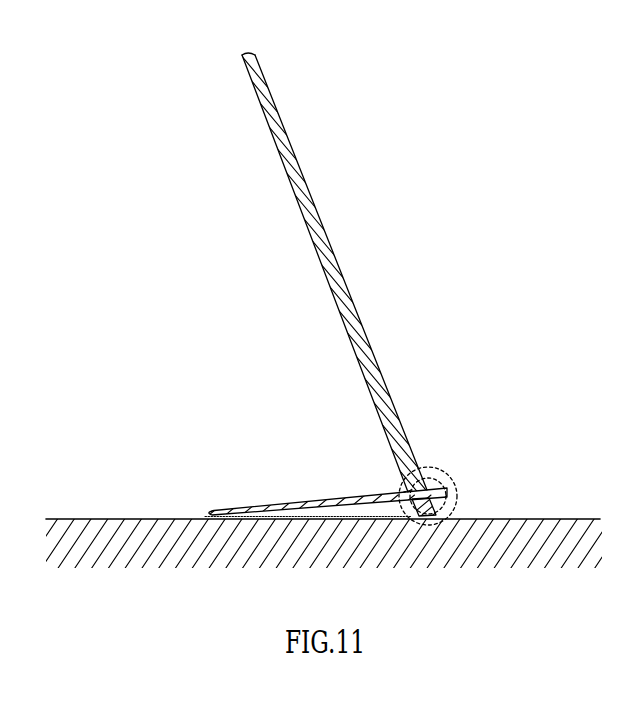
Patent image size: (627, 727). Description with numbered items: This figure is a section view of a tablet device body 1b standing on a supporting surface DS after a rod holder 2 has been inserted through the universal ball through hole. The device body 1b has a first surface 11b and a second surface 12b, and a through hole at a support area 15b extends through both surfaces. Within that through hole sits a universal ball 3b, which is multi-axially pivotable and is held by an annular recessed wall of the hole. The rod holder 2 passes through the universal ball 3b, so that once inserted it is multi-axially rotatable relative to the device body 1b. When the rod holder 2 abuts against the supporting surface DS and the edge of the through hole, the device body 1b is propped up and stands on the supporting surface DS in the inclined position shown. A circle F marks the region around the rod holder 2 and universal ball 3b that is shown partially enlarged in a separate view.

The device body 1b is at (335, 280).
The first surface 11b is at (323, 225).
The second surface 12b is at (306, 226).
The rod holder 2 is at (276, 505).
The universal ball 3b is at (410, 489).
The support area 15b is at (438, 471).
The circle F is at (458, 494).
The supporting surface DS is at (114, 518).